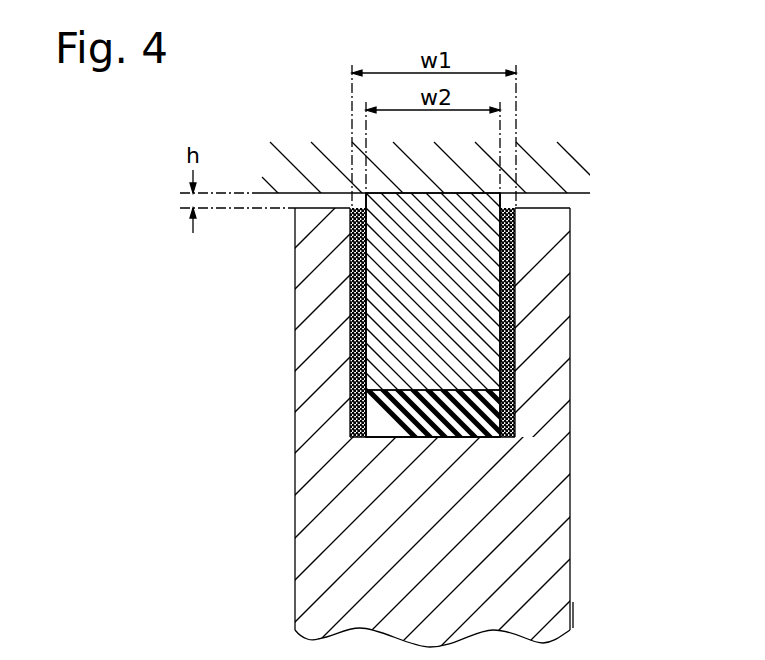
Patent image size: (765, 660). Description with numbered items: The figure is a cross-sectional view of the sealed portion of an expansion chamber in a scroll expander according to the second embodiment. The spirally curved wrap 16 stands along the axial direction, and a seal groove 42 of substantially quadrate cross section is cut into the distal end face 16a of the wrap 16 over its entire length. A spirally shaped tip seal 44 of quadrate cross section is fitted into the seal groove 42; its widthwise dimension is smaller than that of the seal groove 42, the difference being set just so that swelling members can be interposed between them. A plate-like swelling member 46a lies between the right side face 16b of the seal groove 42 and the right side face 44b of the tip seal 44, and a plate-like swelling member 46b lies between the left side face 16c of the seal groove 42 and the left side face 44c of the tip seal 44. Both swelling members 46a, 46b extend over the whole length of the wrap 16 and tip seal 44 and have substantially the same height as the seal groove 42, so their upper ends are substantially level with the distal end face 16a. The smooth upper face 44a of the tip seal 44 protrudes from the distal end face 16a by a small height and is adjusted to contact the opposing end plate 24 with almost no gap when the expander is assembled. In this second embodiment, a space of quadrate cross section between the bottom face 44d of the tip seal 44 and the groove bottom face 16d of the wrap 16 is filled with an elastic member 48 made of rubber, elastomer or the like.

The wrap 16 is at (585, 520).
The distal end face of the wrap 16a is at (548, 208).
The right side face of the seal groove 16b is at (515, 280).
The left side face of the seal groove 16c is at (360, 268).
The groove bottom face of the wrap 16d is at (450, 437).
The end plate 24 is at (298, 158).
The seal groove 42 is at (508, 248).
The tip seal 44 is at (403, 368).
The upper face of the tip seal 44a is at (428, 192).
The right side face of the tip seal 44b is at (503, 350).
The left side face of the tip seal 44c is at (363, 350).
The bottom face of the tip seal 44d is at (397, 398).
The swelling member 46a is at (513, 317).
The swelling member 46b is at (353, 298).
The elastic member 48 is at (473, 402).